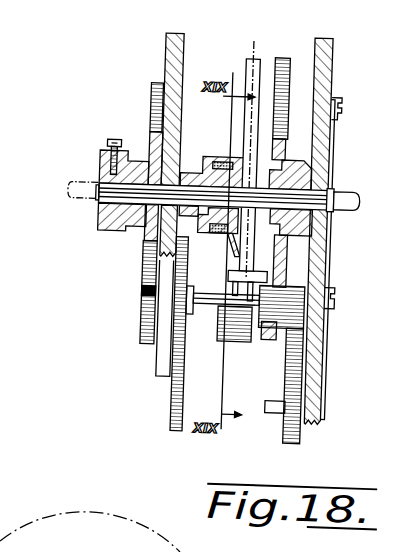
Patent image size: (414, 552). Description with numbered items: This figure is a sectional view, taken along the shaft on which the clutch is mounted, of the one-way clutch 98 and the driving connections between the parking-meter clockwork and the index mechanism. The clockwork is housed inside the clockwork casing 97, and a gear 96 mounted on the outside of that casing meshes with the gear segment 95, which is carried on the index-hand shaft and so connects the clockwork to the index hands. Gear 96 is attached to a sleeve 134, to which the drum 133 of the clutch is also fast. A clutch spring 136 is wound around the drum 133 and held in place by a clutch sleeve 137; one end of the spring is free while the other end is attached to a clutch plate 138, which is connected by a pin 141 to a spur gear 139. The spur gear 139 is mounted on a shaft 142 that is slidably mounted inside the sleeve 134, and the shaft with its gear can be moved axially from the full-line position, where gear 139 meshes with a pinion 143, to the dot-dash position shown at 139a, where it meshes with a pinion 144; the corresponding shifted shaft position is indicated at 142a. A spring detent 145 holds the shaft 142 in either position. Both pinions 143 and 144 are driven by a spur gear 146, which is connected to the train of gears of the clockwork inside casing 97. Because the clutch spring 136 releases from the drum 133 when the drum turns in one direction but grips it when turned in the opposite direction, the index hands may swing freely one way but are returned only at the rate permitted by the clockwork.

The gear segment 95 is at (149, 338).
The gear 96 is at (148, 97).
The clockwork casing 97 is at (182, 375).
The one-way clutch 98 is at (212, 157).
The drum 133 is at (292, 230).
The sleeve 134 is at (100, 212).
The clutch spring 136 is at (224, 234).
The clutch sleeve 137 is at (224, 157).
The clutch plate 138 is at (290, 262).
The spur gear 139 is at (276, 55).
The spur gear (shifted position) 139a is at (245, 58).
The pin 141 is at (298, 271).
The shaft 142 is at (360, 196).
The shaft extension 142a is at (76, 188).
The pinion 143 is at (273, 340).
The pinion 144 is at (243, 342).
The spring detent 145 is at (332, 166).
The spur gear 146 is at (308, 436).